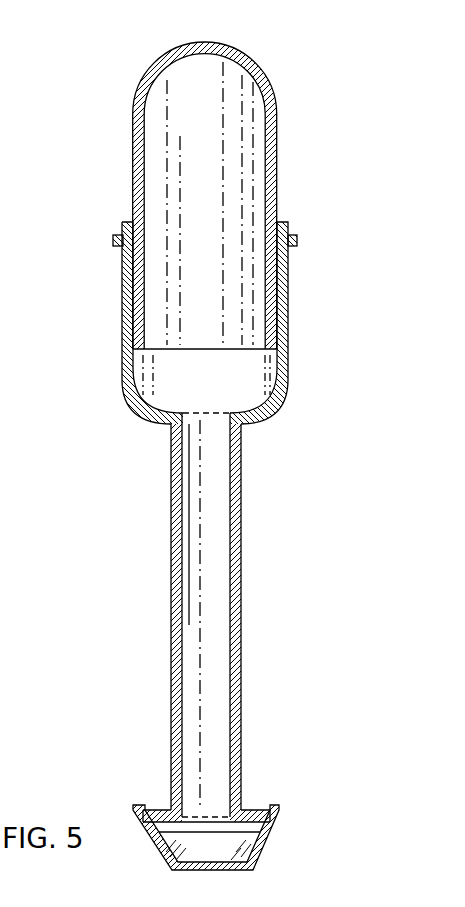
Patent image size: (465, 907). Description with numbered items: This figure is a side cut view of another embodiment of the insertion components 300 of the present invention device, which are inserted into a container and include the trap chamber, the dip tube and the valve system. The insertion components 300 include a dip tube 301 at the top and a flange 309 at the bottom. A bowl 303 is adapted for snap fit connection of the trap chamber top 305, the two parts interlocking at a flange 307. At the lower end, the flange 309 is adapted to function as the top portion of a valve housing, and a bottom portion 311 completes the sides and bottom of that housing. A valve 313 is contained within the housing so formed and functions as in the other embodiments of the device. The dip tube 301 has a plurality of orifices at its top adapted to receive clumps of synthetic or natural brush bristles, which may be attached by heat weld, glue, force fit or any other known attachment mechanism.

The insertion components 300 is at (102, 356).
The dip tube 301 is at (241, 570).
The bowl 303 is at (288, 350).
The trap chamber top 305 is at (276, 122).
The flange 307 is at (297, 242).
The flange 309 is at (167, 809).
The bottom portion 311 is at (280, 822).
The valve 313 is at (192, 843).